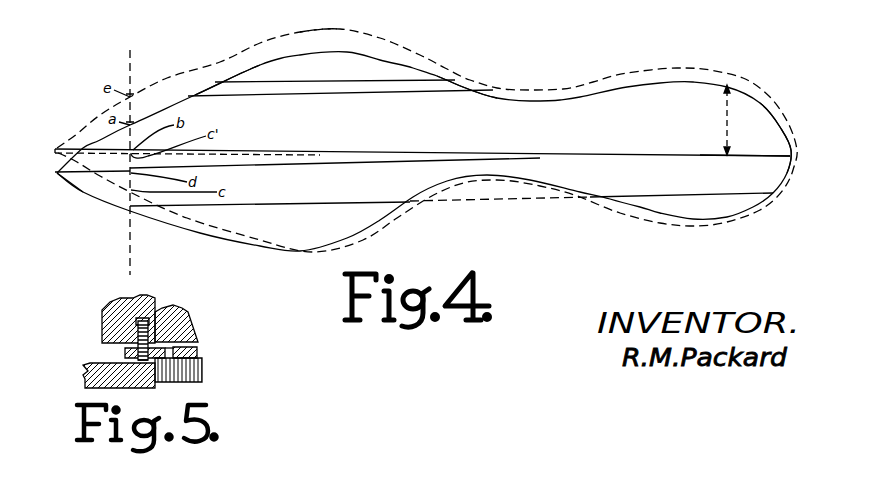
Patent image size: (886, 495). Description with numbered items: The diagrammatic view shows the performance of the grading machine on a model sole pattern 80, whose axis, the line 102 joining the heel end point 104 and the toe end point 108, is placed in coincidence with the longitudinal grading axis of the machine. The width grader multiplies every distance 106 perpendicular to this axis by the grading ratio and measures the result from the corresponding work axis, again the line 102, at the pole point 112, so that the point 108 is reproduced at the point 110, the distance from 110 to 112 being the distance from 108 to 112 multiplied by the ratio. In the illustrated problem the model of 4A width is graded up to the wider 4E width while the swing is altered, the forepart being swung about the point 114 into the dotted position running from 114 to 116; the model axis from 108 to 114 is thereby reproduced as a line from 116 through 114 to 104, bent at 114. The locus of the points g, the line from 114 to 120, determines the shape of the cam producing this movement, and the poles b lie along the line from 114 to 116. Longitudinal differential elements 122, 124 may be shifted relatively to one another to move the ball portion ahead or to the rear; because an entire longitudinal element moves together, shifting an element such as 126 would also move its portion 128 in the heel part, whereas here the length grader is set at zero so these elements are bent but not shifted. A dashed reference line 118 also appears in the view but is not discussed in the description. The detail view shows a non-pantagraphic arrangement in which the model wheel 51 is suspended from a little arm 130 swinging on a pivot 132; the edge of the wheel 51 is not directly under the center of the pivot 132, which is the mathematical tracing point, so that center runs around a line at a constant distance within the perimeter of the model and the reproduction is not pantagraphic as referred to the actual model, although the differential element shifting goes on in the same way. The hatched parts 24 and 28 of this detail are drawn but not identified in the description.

In FIG. 4, the grading axis line 102 is at (305, 166).
In FIG. 4, the heel end point 104 is at (790, 156).
In FIG. 4, the perpendicular distance 106 is at (728, 127).
In FIG. 4, the toe end point 108 is at (732, 86).
In FIG. 4, the reproduced point 110 is at (728, 83).
In FIG. 4, the pole point 112 is at (728, 157).
In FIG. 4, the swing point 114 is at (503, 160).
In FIG. 4, the swung axis end point 116 is at (55, 149).
In FIG. 4, the section line 118 is at (130, 52).
In FIG. 4, the cam locus end point 120 is at (55, 151).
In FIG. 4, the longitudinal differential element 122 is at (383, 90).
In FIG. 4, the longitudinal differential element 124 is at (413, 81).
In FIG. 4, the longitudinal differential element 126 is at (360, 203).
In FIG. 4, the heel portion of element 128 is at (647, 195).
In FIG. 4, the model sole pattern 80 is at (452, 89).
In FIG. 5, the model sole pattern 80 is at (97, 380).
In FIG. 4, the model width designation 4A is at (260, 67).
In FIG. 4, the graded width designation 4E is at (307, 32).
In FIG. 5, the upper block 28 is at (155, 297).
In FIG. 5, the wedge block 24 is at (197, 333).
In FIG. 5, the little arm 130 is at (125, 352).
In FIG. 5, the pivot 132 is at (138, 322).
In FIG. 5, the model wheel 51 is at (198, 368).